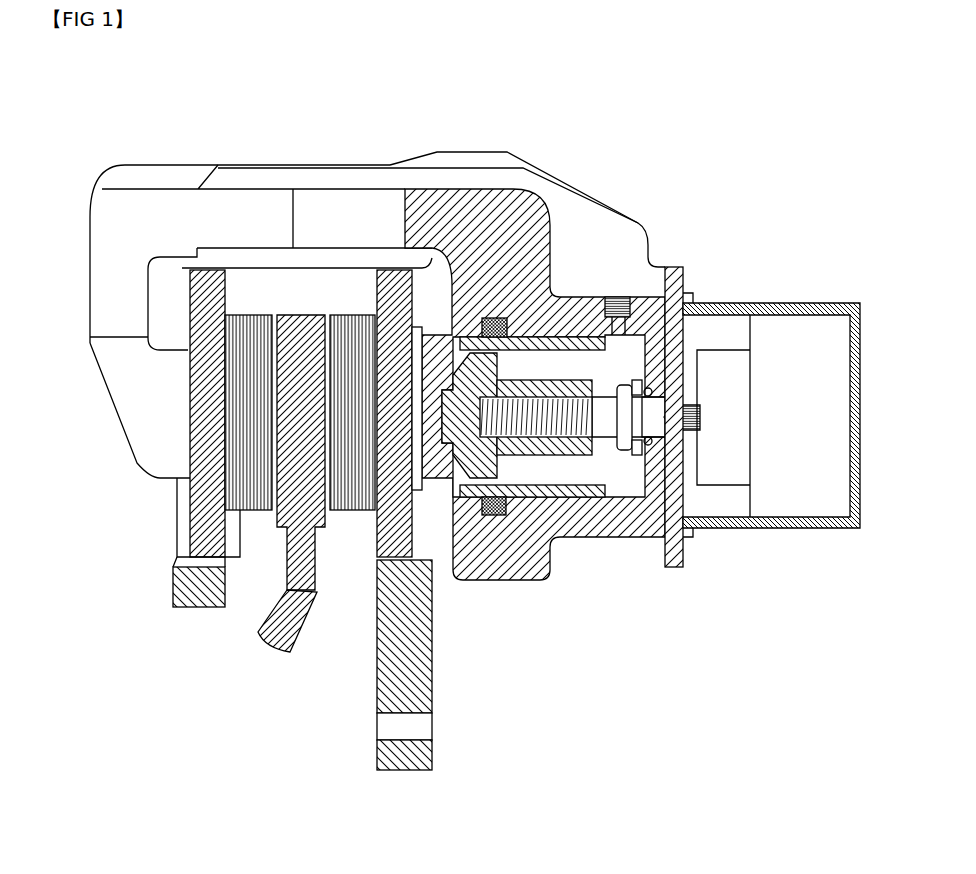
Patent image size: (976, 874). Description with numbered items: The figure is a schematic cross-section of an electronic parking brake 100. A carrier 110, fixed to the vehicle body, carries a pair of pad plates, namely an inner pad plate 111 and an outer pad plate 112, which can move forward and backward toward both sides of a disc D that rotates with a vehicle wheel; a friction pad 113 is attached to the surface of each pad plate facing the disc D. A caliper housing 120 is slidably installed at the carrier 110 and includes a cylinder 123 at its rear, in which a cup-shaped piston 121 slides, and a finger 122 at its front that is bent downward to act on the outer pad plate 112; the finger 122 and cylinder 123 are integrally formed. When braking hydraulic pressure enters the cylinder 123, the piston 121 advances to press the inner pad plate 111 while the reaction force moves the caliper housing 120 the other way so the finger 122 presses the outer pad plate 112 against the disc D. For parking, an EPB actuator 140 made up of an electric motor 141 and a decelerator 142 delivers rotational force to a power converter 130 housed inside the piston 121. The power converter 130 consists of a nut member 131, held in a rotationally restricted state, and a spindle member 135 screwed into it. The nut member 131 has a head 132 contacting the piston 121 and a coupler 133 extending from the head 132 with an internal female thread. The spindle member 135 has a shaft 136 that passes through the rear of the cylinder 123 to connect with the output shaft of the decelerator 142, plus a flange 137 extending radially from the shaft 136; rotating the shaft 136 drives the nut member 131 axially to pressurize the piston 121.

The electronic parking brake 100 is at (505, 124).
The carrier 110 is at (385, 690).
The inner pad plate 111 is at (373, 557).
The outer pad plate 112 is at (200, 510).
The friction pad 113 is at (260, 510).
The caliper housing 120 is at (286, 184).
The piston 121 is at (427, 530).
The finger 122 is at (117, 388).
The cylinder 123 is at (682, 268).
The power converter 130 is at (559, 358).
The nut member 131 is at (555, 690).
The head 132 is at (483, 518).
The coupler 133 is at (545, 450).
The spindle member 135 is at (638, 650).
The shaft 136 is at (655, 450).
The flange 137 is at (615, 448).
The EPB actuator 140 is at (840, 233).
The electric motor 141 is at (728, 365).
The decelerator 142 is at (817, 365).
The disc D is at (295, 628).